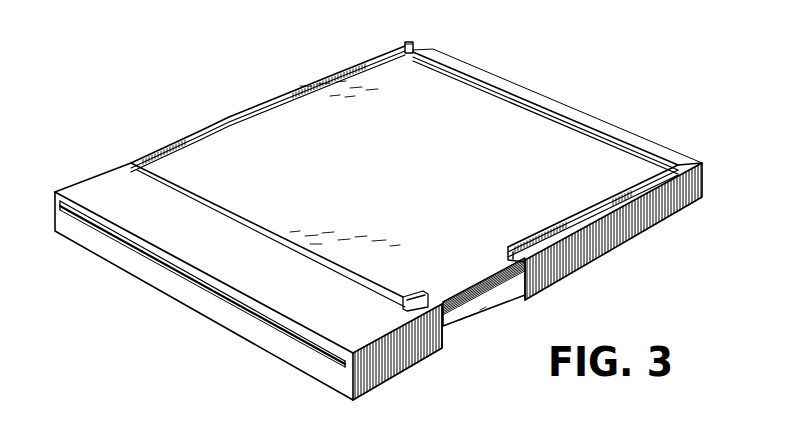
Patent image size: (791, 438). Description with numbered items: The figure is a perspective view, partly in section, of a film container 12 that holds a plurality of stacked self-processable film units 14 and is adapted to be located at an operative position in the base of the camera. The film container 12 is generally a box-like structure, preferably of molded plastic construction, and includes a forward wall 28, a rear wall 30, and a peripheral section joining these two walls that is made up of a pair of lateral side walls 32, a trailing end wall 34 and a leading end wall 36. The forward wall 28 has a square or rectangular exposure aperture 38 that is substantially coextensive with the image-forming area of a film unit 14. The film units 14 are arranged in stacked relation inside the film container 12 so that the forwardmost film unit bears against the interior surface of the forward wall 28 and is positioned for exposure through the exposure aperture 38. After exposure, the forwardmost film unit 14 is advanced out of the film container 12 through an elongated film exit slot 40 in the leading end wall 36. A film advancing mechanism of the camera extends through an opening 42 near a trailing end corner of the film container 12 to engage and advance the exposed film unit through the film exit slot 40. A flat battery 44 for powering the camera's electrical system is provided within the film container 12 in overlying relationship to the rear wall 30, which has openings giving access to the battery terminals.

The film container 12 is at (228, 113).
The film unit 14 is at (490, 292).
The forward wall 28 is at (120, 185).
The rear wall 30 is at (556, 286).
The lateral side wall 32 is at (602, 236).
The trailing end wall 34 is at (625, 128).
The leading end wall 36 is at (193, 298).
The exposure aperture 38 is at (305, 115).
The film exit slot 40 is at (252, 306).
The opening 42 is at (404, 42).
The flat battery 44 is at (462, 325).